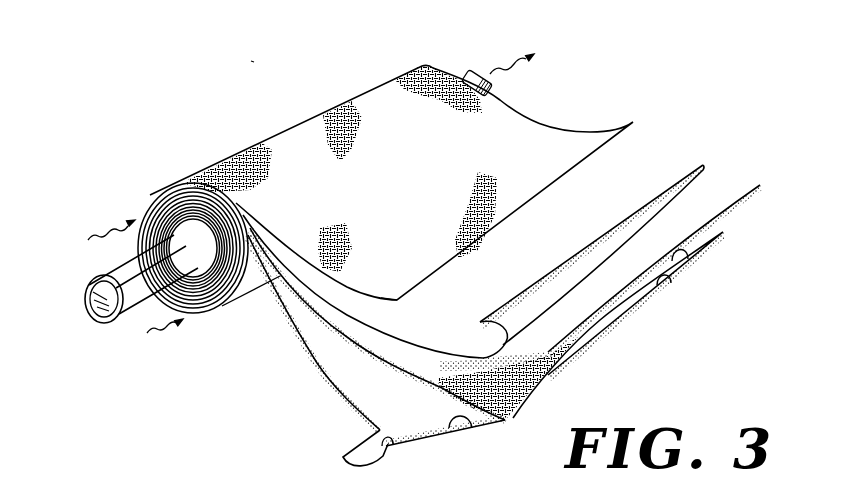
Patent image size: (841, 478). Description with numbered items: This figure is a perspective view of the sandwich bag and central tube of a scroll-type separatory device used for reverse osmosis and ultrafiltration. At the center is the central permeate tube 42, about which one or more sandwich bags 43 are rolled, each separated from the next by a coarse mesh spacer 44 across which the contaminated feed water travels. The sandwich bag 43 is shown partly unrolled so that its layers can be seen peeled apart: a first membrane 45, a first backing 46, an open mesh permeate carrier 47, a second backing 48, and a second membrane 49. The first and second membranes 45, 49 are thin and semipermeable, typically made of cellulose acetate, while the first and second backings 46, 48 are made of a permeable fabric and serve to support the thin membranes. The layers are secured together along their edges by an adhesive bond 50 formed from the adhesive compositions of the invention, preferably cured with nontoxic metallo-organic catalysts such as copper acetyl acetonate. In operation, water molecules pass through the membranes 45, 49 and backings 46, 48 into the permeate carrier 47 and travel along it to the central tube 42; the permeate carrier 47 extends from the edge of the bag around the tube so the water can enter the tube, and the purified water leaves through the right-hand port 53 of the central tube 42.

The central permeate tube 42 is at (106, 272).
The sandwich bag 43 is at (656, 318).
The coarse mesh spacer 44 is at (522, 140).
The first membrane 45 is at (598, 185).
The first backing 46 is at (707, 210).
The open mesh permeate carrier 47 is at (624, 320).
The second backing 48 is at (350, 378).
The second membrane 49 is at (363, 452).
The adhesive bond 50 is at (677, 292).
The right-hand port 53 is at (481, 70).